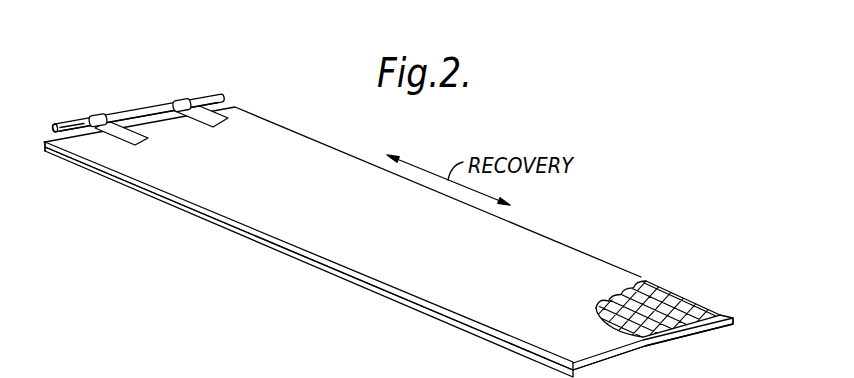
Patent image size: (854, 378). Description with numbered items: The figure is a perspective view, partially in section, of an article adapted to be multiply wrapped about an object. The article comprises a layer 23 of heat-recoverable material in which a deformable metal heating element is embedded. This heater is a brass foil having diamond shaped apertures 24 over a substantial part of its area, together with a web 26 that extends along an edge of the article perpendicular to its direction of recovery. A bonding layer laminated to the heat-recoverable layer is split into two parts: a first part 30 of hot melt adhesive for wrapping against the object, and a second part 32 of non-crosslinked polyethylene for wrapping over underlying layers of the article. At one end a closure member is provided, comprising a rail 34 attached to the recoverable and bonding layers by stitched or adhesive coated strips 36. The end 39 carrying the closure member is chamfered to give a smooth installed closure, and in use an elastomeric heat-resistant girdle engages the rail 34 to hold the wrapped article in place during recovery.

The layer of heat-recoverable material 23 is at (612, 355).
The diamond shaped apertures 24 is at (670, 312).
The web 26 is at (717, 318).
The first part of bonding layer 30 is at (518, 351).
The second part of bonding layer 32 is at (242, 233).
The rail 34 is at (210, 94).
The stitched or adhesive coated strips 36 is at (177, 102).
The end of the article 39 is at (49, 139).